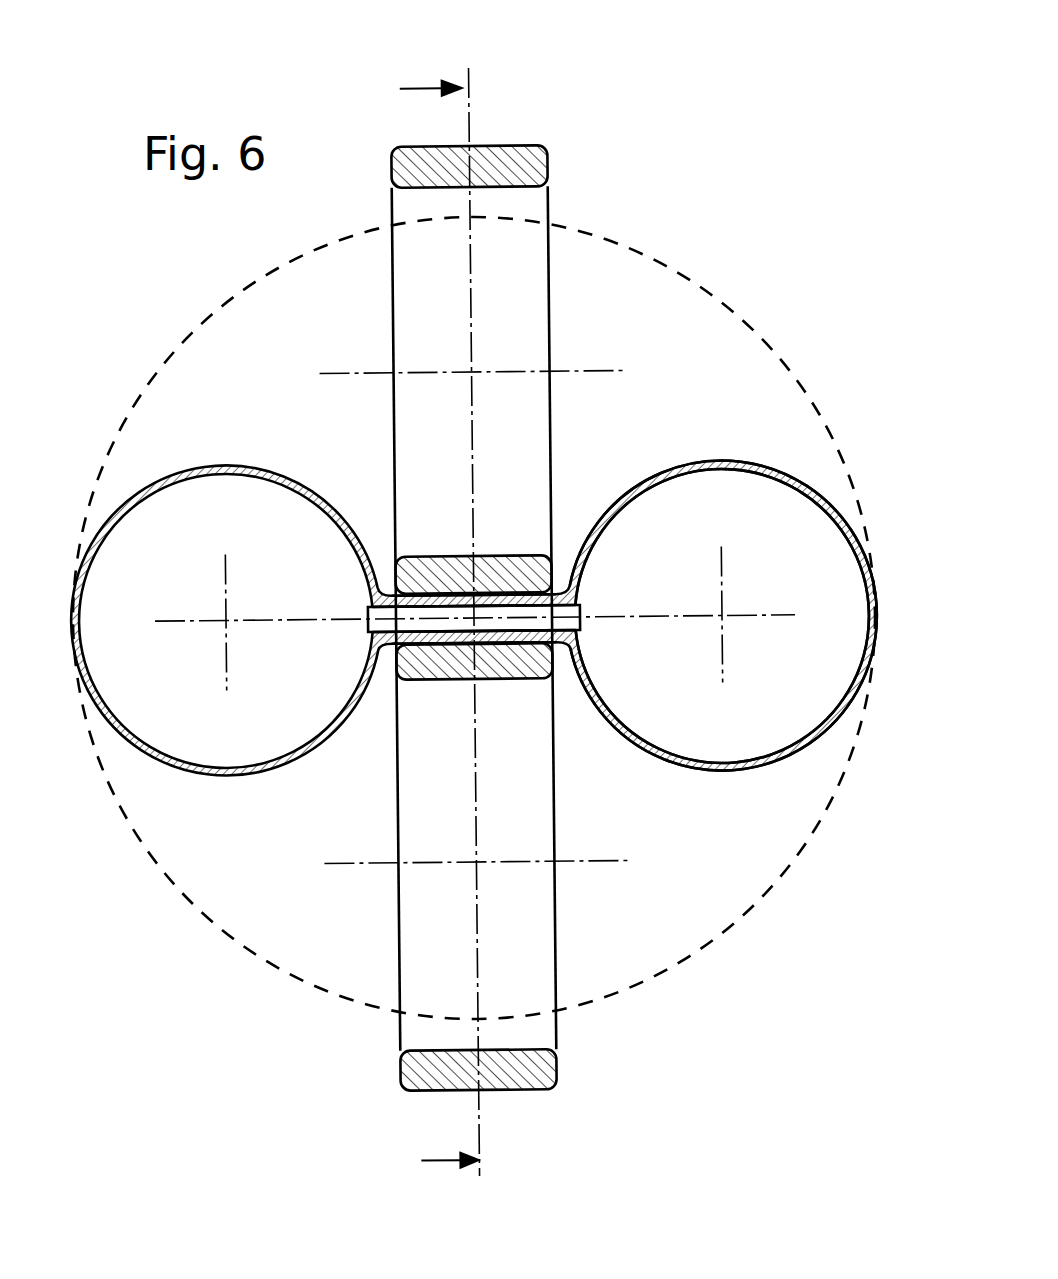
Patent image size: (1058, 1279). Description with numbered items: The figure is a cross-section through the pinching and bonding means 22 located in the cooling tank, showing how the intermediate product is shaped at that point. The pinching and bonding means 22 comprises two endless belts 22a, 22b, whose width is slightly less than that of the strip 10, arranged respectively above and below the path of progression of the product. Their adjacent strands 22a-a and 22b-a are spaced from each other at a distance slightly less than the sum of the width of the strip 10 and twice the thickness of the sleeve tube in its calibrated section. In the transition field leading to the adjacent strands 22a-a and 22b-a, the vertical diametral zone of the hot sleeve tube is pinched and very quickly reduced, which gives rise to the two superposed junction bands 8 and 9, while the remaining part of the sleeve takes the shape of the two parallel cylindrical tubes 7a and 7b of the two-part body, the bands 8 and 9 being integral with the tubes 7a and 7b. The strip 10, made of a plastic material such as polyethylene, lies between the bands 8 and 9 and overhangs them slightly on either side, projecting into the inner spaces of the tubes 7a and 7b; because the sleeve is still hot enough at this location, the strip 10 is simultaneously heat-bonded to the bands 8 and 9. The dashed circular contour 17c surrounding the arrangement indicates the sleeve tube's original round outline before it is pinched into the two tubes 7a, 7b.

The pinching and bonding means 22 is at (517, 103).
The upper endless belt 22a is at (535, 167).
The lower endless belt 22b is at (414, 1070).
The adjacent strand of upper belt 22a-a is at (523, 567).
The adjacent strand of lower belt 22b-a is at (425, 663).
The circular contour 17c is at (695, 283).
The cylindrical tube 7a is at (225, 465).
The cylindrical tube 7b is at (720, 462).
The junction band 8 is at (450, 600).
The junction band 9 is at (487, 632).
The strip 10 is at (458, 623).